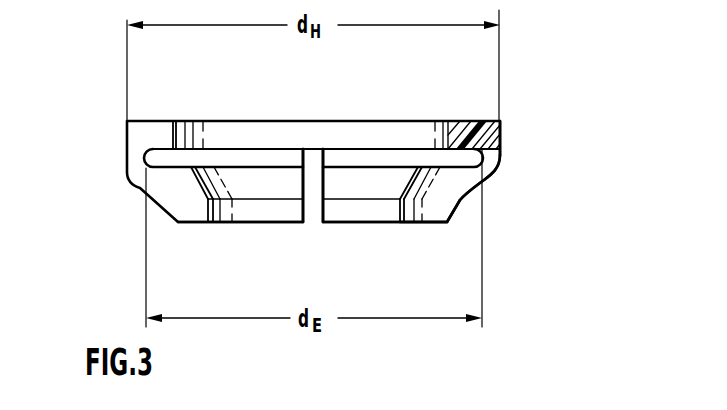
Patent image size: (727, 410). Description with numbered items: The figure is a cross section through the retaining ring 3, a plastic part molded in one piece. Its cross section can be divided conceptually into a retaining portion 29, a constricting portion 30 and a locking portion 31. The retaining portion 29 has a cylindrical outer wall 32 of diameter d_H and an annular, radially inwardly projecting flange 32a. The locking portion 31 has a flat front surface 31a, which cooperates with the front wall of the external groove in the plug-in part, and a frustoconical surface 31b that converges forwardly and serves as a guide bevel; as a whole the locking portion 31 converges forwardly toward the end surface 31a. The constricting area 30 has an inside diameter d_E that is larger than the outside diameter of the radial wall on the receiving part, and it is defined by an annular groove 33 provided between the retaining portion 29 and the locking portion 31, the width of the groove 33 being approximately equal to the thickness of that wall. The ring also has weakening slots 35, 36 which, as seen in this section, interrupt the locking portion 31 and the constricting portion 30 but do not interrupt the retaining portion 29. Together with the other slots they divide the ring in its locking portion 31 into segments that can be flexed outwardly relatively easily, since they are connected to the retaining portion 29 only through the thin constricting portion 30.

The retaining ring 3 is at (329, 168).
The retaining portion 29 is at (505, 133).
The constricting portion 30 is at (501, 178).
The locking portion 31 is at (448, 189).
The flat front surface 31a is at (441, 224).
The frustoconical surface 31b is at (400, 201).
The cylindrical outer wall 32 is at (126, 147).
The flange 32a is at (448, 133).
The annular groove 33 is at (474, 125).
The weakening slot 35 is at (323, 208).
The weakening slot 36 is at (497, 152).